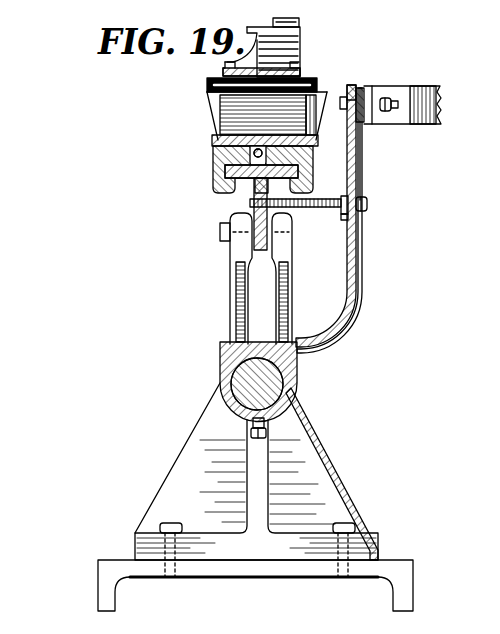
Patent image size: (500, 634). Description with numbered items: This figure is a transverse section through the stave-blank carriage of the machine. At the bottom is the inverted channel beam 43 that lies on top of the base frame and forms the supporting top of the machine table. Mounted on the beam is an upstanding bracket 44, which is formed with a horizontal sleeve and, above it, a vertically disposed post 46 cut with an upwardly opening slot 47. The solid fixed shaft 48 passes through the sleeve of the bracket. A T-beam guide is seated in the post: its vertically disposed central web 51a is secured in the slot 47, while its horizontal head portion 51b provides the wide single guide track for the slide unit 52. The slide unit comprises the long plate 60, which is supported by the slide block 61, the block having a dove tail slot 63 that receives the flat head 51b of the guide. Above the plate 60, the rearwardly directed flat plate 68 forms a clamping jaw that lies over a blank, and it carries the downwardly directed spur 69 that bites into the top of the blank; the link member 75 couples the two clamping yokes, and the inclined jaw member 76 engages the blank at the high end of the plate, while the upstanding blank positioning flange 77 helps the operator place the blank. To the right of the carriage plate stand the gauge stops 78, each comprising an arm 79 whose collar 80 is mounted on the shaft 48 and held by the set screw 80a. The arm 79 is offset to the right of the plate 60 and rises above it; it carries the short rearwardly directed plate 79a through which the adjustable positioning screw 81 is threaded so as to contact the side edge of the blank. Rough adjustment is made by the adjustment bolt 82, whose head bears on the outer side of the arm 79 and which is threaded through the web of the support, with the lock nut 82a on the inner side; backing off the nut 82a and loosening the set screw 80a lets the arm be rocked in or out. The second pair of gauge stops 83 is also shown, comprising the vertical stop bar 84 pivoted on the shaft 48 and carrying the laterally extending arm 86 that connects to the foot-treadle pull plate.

The inverted channel beam 43 is at (413, 592).
The upstanding bracket 44 is at (350, 510).
The vertically disposed post 46 is at (232, 316).
The upwardly opening slot 47 is at (244, 248).
The solid fixed shaft 48 is at (275, 395).
The central web 51a is at (254, 192).
The head portion 51b is at (313, 165).
The slide unit 52 is at (206, 90).
The plate 60 is at (220, 106).
The slide block 61 is at (213, 158).
The dove tail slot 63 is at (225, 171).
The flat plate 68 is at (300, 50).
The spur 69 is at (223, 69).
The link member 75 is at (214, 144).
The jaw member 76 is at (300, 22).
The blank positioning flange 77 is at (225, 122).
The gauge stops 78 is at (352, 85).
The arm 79 is at (332, 338).
The plate 79a is at (362, 118).
The collar 80 is at (222, 352).
The set screw 80a is at (251, 432).
The adjustable positioning screw 81 is at (386, 97).
The adjustment bolt 82 is at (367, 203).
The lock nut 82a is at (344, 221).
The gauge stops 83 is at (364, 88).
The vertical stop bar 84 is at (363, 286).
The laterally extending arm 86 is at (437, 88).